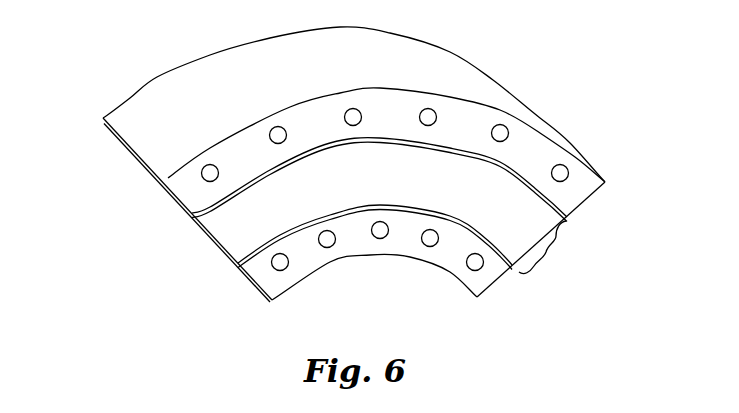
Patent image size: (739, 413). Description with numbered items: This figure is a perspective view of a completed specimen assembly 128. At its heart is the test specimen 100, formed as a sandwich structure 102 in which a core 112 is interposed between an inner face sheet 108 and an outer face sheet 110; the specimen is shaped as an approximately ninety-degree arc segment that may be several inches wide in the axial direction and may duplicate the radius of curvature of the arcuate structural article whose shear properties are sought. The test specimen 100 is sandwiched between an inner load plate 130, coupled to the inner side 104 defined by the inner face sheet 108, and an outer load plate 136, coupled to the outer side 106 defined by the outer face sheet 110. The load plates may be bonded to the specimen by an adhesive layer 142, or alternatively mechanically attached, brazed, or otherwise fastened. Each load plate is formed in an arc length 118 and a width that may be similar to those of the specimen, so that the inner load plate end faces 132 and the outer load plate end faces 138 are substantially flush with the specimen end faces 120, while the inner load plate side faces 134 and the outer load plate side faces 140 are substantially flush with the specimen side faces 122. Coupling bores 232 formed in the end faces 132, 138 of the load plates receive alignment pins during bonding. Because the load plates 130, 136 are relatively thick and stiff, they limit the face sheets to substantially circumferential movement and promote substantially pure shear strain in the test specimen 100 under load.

The test specimen 100 is at (557, 248).
The sandwich structure 102 is at (533, 207).
The inner side 104 is at (512, 267).
The outer side 106 is at (567, 217).
The inner face sheet 108 is at (243, 268).
The outer face sheet 110 is at (193, 215).
The core 112 is at (217, 243).
The arc length 118 is at (262, 172).
The specimen end faces 120 is at (345, 193).
The specimen side faces 122 is at (132, 163).
The specimen assembly 128 is at (588, 132).
The inner load plate 130 is at (258, 288).
The inner load plate end faces 132 is at (405, 245).
The inner load plate side faces 134 is at (478, 298).
The outer load plate 136 is at (170, 194).
The outer load plate end faces 138 is at (473, 115).
The outer load plate side faces 140 is at (108, 132).
The adhesive layer 142 is at (207, 230).
The coupling bores 232 is at (507, 130).